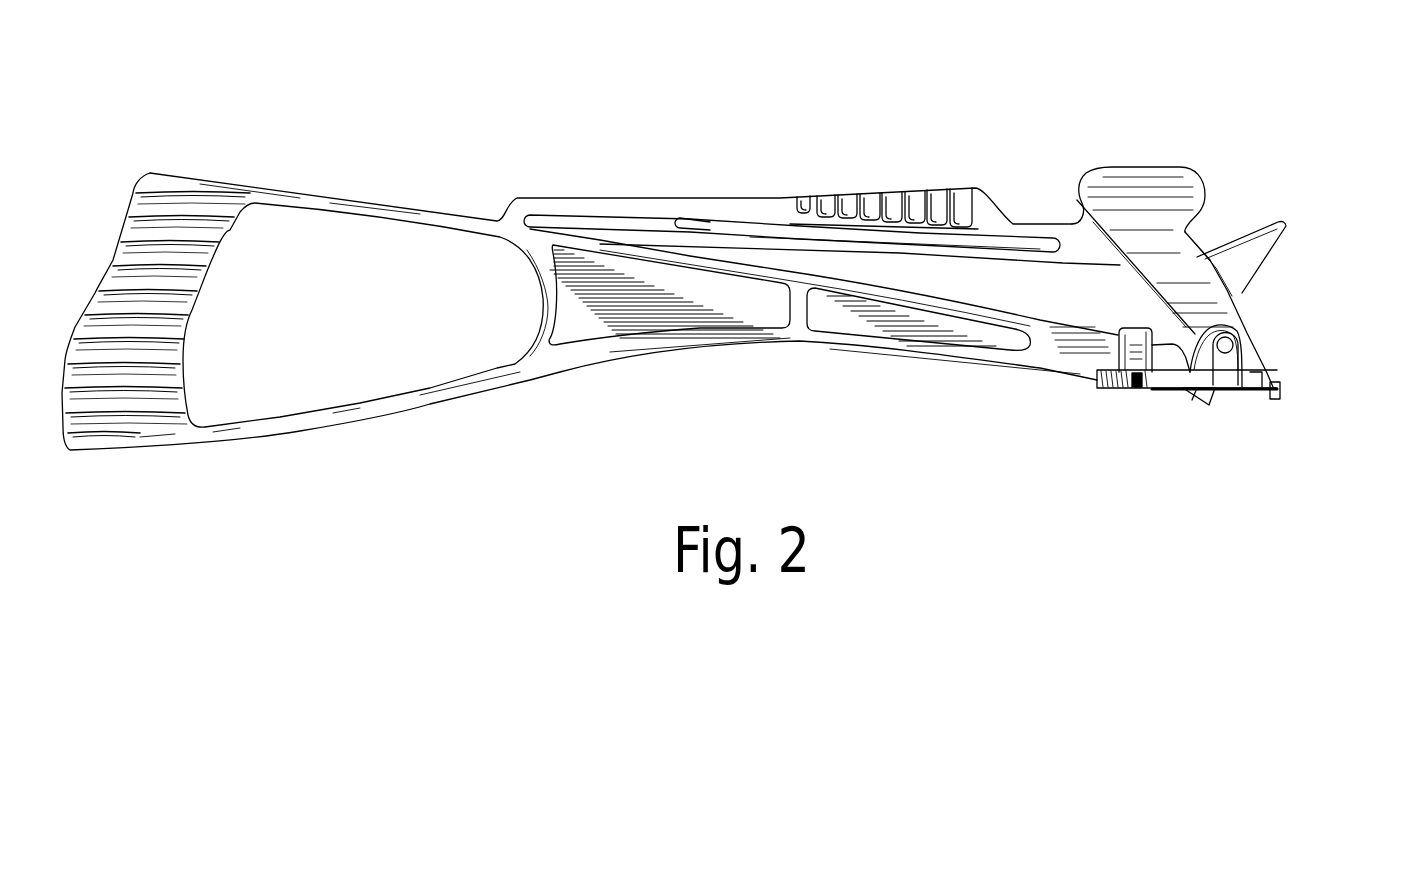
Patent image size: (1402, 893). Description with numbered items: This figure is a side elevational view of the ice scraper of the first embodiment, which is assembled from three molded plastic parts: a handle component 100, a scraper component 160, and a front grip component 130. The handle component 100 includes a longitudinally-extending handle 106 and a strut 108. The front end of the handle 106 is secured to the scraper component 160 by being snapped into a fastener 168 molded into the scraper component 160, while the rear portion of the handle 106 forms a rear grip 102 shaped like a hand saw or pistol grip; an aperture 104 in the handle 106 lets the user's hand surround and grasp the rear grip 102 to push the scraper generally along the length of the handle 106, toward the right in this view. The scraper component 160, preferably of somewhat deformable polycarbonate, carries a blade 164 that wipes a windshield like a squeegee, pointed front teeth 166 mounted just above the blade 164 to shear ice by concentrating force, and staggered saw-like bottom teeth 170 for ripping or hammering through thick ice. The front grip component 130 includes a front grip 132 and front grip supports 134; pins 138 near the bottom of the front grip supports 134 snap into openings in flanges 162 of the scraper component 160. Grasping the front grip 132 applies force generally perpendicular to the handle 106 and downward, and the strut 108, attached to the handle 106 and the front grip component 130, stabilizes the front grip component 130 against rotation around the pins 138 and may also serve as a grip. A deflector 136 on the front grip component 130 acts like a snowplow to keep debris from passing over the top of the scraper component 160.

The handle component 100 is at (547, 408).
The rear grip 102 is at (122, 243).
The aperture 104 is at (354, 255).
The handle 106 is at (915, 350).
The strut 108 is at (978, 188).
The front grip component 130 is at (1226, 211).
The front grip 132 is at (1150, 167).
The front grip supports 134 is at (1190, 258).
The deflector 136 is at (1260, 244).
The pins 138 is at (1231, 343).
The scraper component 160 is at (1199, 394).
The flanges 162 is at (1247, 362).
The blade 164 is at (1263, 393).
The front teeth 166 is at (1281, 393).
The fastener 168 is at (1134, 334).
The bottom teeth 170 is at (1207, 400).